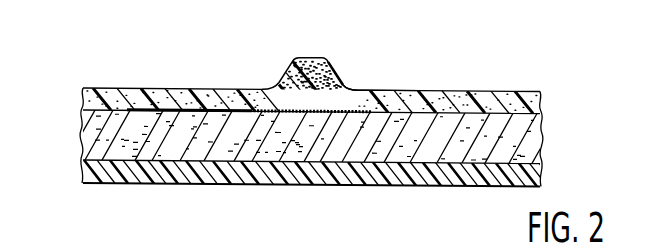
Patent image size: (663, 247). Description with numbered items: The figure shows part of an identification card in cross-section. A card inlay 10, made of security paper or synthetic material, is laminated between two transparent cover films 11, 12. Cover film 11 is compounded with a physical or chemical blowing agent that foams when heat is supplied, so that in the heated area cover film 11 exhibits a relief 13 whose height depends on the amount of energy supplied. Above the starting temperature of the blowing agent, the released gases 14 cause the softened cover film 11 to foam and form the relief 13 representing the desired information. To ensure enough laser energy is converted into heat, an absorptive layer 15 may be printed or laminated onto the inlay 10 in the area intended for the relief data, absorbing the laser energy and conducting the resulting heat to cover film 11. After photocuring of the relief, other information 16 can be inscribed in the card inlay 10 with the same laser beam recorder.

The card inlay 10 is at (104, 140).
The cover film 11 is at (92, 101).
The cover film 12 is at (103, 171).
The relief 13 is at (333, 65).
The released gases 14 is at (286, 70).
The absorptive layer 15 is at (366, 88).
The other information 16 is at (160, 106).